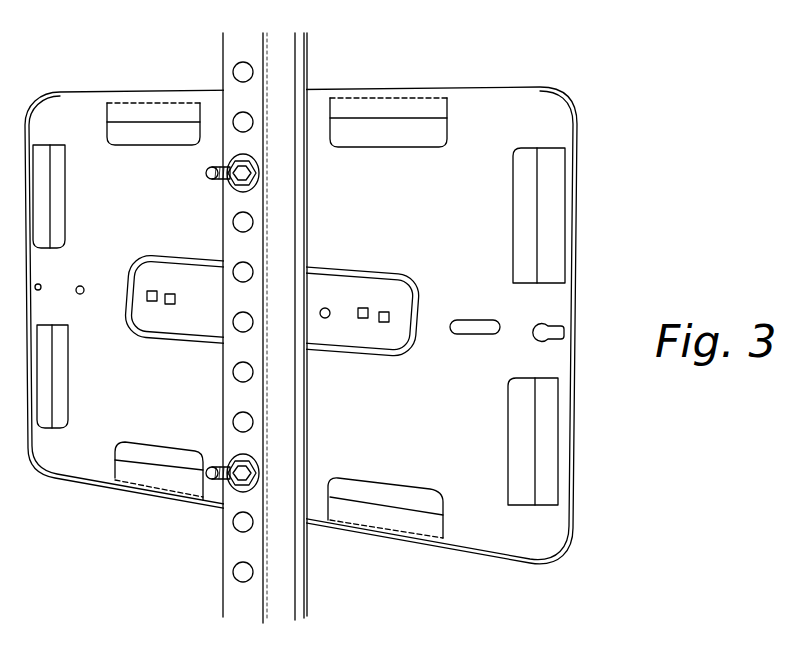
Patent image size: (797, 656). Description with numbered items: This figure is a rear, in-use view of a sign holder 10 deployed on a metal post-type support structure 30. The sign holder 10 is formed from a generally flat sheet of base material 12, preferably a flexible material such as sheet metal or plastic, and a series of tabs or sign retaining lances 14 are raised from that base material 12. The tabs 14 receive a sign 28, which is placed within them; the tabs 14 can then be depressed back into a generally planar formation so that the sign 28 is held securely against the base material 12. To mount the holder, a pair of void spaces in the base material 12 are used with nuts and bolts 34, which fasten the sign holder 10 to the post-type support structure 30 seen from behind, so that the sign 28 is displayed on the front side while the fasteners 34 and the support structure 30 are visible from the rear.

The sign holder 10 is at (629, 167).
The base material 12 is at (540, 532).
The sign retaining lances 14 is at (145, 112).
The sign 28 is at (527, 215).
The post-type support structure 30 is at (237, 593).
The nuts and bolts 34 is at (255, 172).